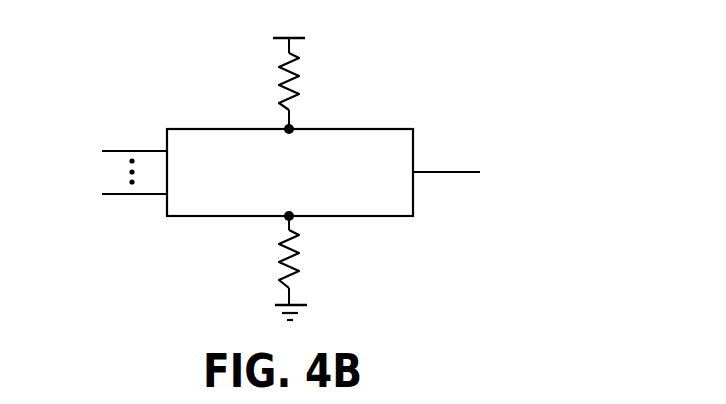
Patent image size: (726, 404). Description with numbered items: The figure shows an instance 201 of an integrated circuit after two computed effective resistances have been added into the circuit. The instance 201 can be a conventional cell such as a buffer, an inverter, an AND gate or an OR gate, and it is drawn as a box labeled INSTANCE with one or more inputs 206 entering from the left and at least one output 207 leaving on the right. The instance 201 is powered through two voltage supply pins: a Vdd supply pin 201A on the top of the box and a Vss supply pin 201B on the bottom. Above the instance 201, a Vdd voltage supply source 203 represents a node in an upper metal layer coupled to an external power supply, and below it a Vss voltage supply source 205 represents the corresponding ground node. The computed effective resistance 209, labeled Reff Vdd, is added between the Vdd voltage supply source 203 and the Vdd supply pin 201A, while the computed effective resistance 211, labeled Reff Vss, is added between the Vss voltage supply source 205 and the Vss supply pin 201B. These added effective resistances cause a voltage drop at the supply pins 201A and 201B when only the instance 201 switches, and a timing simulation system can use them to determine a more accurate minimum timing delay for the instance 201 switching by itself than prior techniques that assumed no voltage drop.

The instance 201 is at (387, 217).
The Vdd supply pin 201A is at (297, 125).
The Vss supply pin 201B is at (283, 222).
The Vdd voltage supply source 203 is at (357, 40).
The Vss voltage supply source 205 is at (350, 320).
The inputs 206 is at (132, 147).
The output 207 is at (445, 170).
The computed effective resistance Reff Vdd 209 is at (277, 85).
The computed effective resistance Reff Vss 211 is at (275, 268).